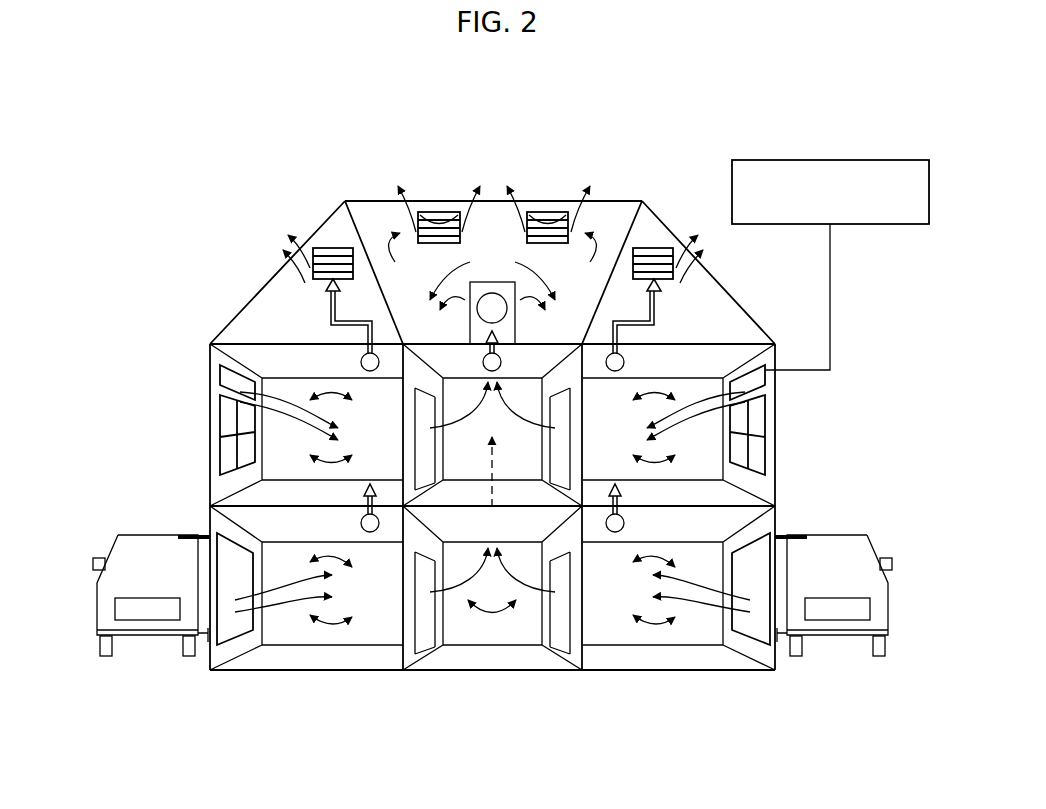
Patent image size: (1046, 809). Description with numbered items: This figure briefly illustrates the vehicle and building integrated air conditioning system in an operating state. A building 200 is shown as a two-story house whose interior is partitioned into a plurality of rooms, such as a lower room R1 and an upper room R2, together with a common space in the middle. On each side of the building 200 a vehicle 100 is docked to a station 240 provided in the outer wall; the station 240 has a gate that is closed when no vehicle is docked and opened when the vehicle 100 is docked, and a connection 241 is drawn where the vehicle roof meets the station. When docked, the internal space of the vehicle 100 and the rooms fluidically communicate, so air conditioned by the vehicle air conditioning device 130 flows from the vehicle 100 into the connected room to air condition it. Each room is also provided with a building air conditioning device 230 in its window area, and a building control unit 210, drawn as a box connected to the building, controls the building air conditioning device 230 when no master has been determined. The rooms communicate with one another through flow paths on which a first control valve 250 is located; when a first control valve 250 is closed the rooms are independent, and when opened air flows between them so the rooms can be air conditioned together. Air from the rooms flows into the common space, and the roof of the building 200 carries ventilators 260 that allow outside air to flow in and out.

The vehicle 100 is at (115, 668).
The vehicle air conditioning device 130 is at (150, 617).
The building 200 is at (642, 193).
The building control unit 210 is at (863, 160).
The building air conditioning device 230 is at (222, 379).
The station 240 is at (240, 630).
The connection port 241 is at (195, 535).
The first control valve 250 is at (365, 356).
The ventilation opening 260 is at (437, 212).
The first room R1 is at (367, 635).
The second room R2 is at (272, 436).